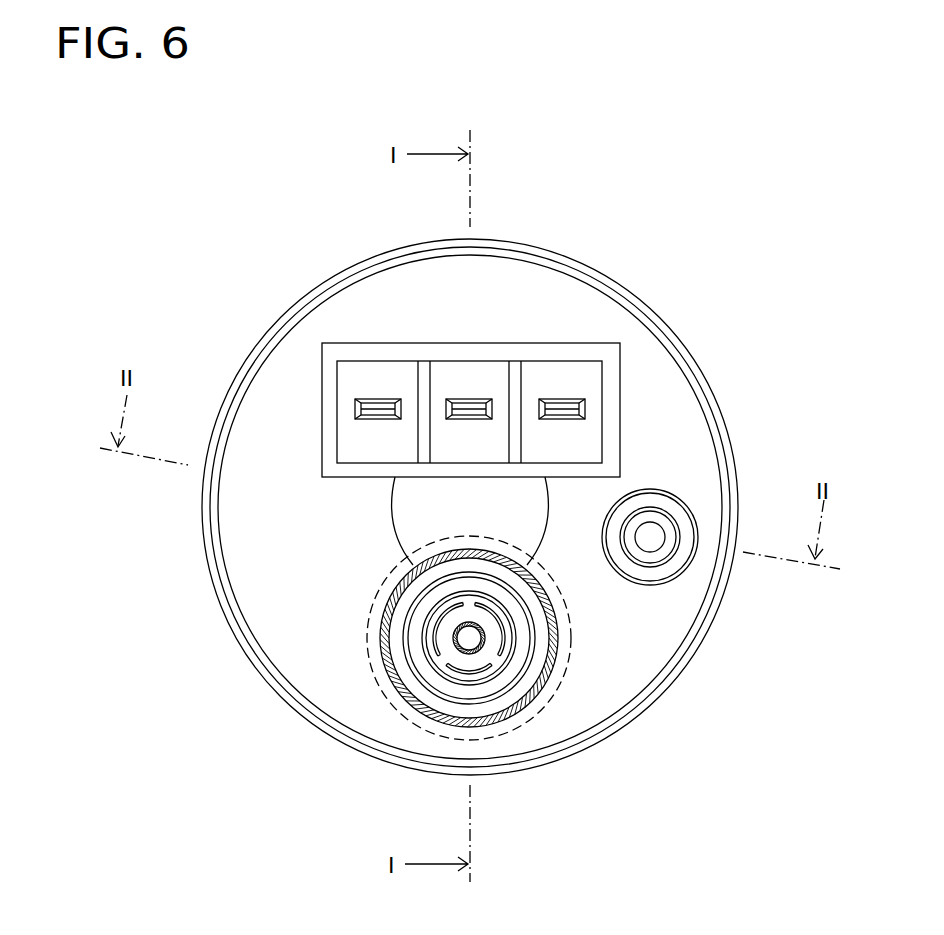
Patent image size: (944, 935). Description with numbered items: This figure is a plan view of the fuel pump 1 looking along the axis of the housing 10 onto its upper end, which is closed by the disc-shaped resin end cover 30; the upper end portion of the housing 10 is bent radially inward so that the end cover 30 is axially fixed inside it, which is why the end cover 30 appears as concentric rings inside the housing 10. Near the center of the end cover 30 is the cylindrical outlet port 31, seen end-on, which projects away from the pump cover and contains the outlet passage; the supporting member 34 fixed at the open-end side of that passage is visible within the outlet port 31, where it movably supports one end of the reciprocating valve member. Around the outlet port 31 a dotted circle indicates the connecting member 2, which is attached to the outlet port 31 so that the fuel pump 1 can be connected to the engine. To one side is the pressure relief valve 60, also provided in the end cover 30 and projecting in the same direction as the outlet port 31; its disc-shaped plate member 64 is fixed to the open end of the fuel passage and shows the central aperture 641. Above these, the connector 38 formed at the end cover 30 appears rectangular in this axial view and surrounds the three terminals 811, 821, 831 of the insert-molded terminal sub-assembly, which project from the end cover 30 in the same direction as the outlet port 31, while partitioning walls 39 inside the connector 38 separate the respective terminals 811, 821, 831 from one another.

The fuel pump 1 is at (288, 230).
The connecting member 2 is at (575, 650).
The housing 10 is at (203, 535).
The end cover 30 is at (300, 608).
The outlet port 31 is at (390, 678).
The supporting member 34 is at (470, 660).
The connector 38 is at (322, 380).
The partitioning walls 39 is at (417, 440).
The pressure relief valve 60 is at (693, 515).
The plate member 64 is at (667, 542).
The aperture 641 is at (672, 538).
The terminal 811 is at (561, 398).
The terminal 821 is at (468, 398).
The terminal 831 is at (378, 398).